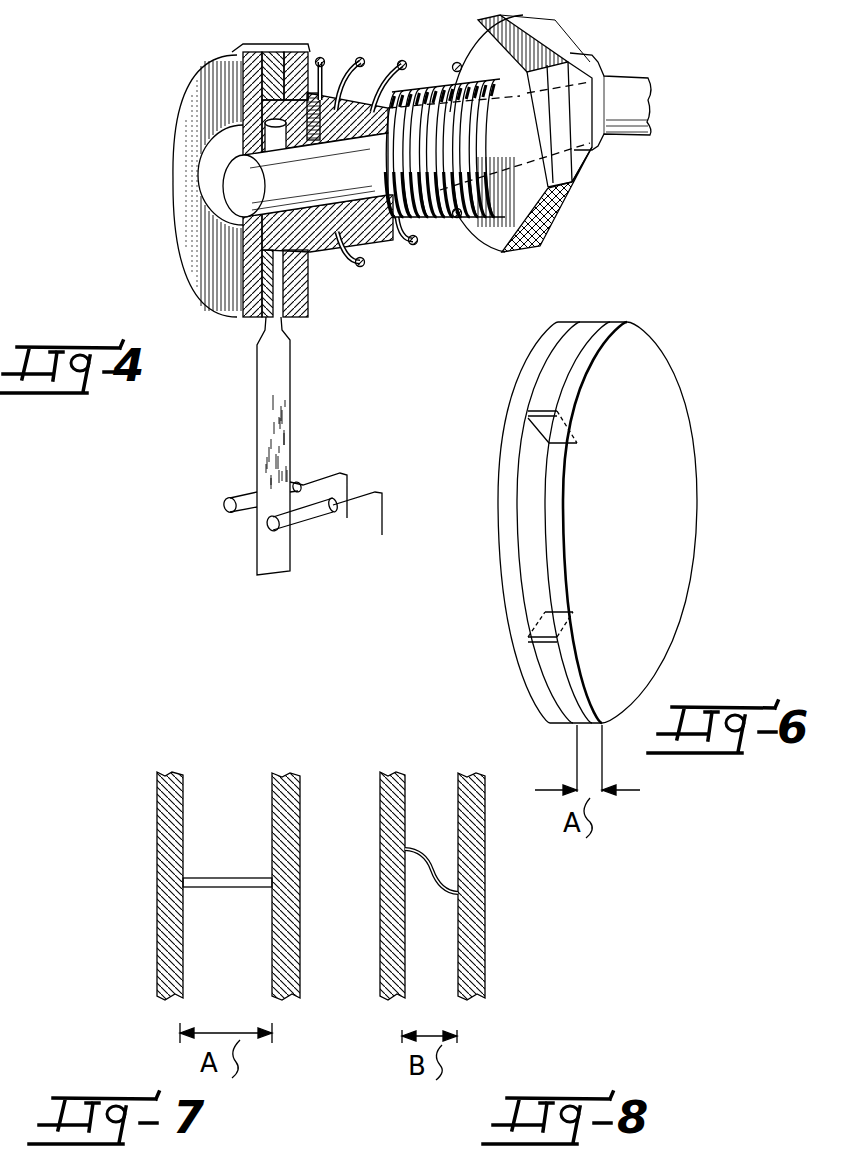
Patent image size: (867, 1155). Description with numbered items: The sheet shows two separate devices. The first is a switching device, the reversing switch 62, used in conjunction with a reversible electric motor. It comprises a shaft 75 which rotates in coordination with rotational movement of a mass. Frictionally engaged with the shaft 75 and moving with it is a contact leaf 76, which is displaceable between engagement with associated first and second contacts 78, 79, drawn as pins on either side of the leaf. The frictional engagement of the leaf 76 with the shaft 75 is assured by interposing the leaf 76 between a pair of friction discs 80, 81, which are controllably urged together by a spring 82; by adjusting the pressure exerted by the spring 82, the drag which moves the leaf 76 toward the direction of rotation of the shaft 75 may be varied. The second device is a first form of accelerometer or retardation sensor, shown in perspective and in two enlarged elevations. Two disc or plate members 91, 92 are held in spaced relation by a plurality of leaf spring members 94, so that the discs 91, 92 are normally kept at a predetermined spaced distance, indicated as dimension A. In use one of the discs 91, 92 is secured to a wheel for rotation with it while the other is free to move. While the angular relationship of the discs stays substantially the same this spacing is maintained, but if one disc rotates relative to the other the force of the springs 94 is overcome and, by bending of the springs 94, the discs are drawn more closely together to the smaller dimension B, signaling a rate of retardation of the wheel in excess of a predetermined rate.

In FIG. 4, the reversing switch 62 is at (177, 251).
In FIG. 4, the shaft 75 is at (232, 182).
In FIG. 4, the contact leaf 76 is at (287, 382).
In FIG. 4, the first contact 78 is at (245, 494).
In FIG. 4, the second contact 79 is at (306, 516).
In FIG. 4, the friction disc 80 is at (254, 316).
In FIG. 4, the friction disc 81 is at (298, 312).
In FIG. 4, the spring 82 is at (365, 258).
In FIG. 6, the disc member 91 is at (530, 378).
In FIG. 7, the disc member 91 is at (168, 948).
In FIG. 8, the disc member 91 is at (386, 830).
In FIG. 6, the disc member 92 is at (655, 362).
In FIG. 7, the disc member 92 is at (285, 956).
In FIG. 8, the disc member 92 is at (478, 838).
In FIG. 6, the leaf spring members 94 is at (530, 428).
In FIG. 7, the leaf spring members 94 is at (248, 884).
In FIG. 8, the leaf spring members 94 is at (438, 876).